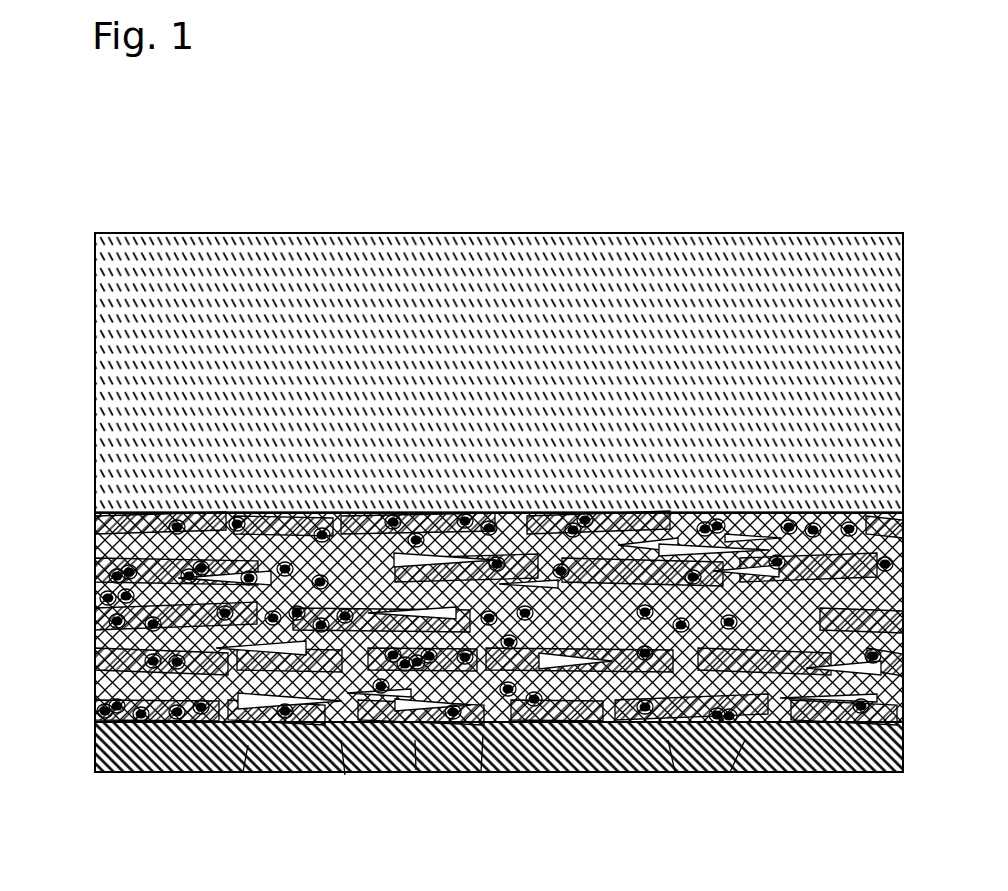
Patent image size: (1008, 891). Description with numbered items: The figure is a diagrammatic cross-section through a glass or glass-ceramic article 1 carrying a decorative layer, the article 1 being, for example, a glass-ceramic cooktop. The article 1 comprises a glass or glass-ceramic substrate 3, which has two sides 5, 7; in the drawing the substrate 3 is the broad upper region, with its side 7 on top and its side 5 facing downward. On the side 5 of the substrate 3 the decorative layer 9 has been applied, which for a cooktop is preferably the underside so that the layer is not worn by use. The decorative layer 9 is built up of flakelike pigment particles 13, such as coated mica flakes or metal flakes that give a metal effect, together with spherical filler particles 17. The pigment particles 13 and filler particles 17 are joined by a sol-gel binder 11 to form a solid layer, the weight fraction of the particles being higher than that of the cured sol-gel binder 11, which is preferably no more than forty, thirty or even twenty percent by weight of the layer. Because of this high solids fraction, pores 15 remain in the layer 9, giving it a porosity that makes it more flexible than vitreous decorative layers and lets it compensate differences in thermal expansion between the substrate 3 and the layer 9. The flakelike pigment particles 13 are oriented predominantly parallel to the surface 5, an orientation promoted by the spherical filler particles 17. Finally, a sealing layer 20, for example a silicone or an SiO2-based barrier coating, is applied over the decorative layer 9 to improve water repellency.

The glass or glass-ceramic article 1 is at (147, 161).
The glass or glass-ceramic substrate 3 is at (445, 318).
The side of the substrate 5 is at (125, 512).
The side of the substrate 7 is at (260, 233).
The decorative layer 9 is at (97, 598).
The sol-gel binder 11 is at (97, 655).
The flakelike pigment particles 13 is at (345, 775).
The pores 15 is at (730, 772).
The filler particles 17 is at (481, 772).
The sealing layer 20 is at (565, 772).